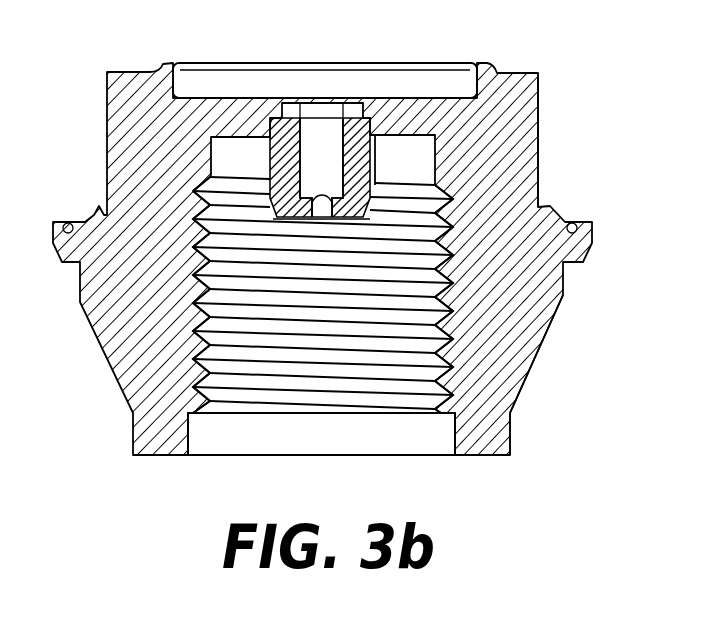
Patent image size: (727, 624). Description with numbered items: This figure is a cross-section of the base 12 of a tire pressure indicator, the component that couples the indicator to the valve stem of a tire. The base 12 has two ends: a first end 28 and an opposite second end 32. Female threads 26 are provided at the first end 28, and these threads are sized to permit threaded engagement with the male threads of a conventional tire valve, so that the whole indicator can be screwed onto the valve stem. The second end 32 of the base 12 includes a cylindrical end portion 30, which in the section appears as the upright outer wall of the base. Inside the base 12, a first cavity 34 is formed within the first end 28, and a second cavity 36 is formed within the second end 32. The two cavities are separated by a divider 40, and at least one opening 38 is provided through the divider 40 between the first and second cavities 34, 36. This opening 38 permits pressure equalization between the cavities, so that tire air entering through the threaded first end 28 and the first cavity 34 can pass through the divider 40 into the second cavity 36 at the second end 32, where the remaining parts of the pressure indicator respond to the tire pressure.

The base 12 is at (352, 266).
The female threads 26 is at (205, 370).
The first end 28 is at (533, 438).
The cylindrical end portion 30 is at (539, 150).
The second end 32 is at (583, 103).
The first cavity 34 is at (268, 423).
The second cavity 36 is at (338, 91).
The opening 38 is at (328, 157).
The divider 40 is at (243, 112).